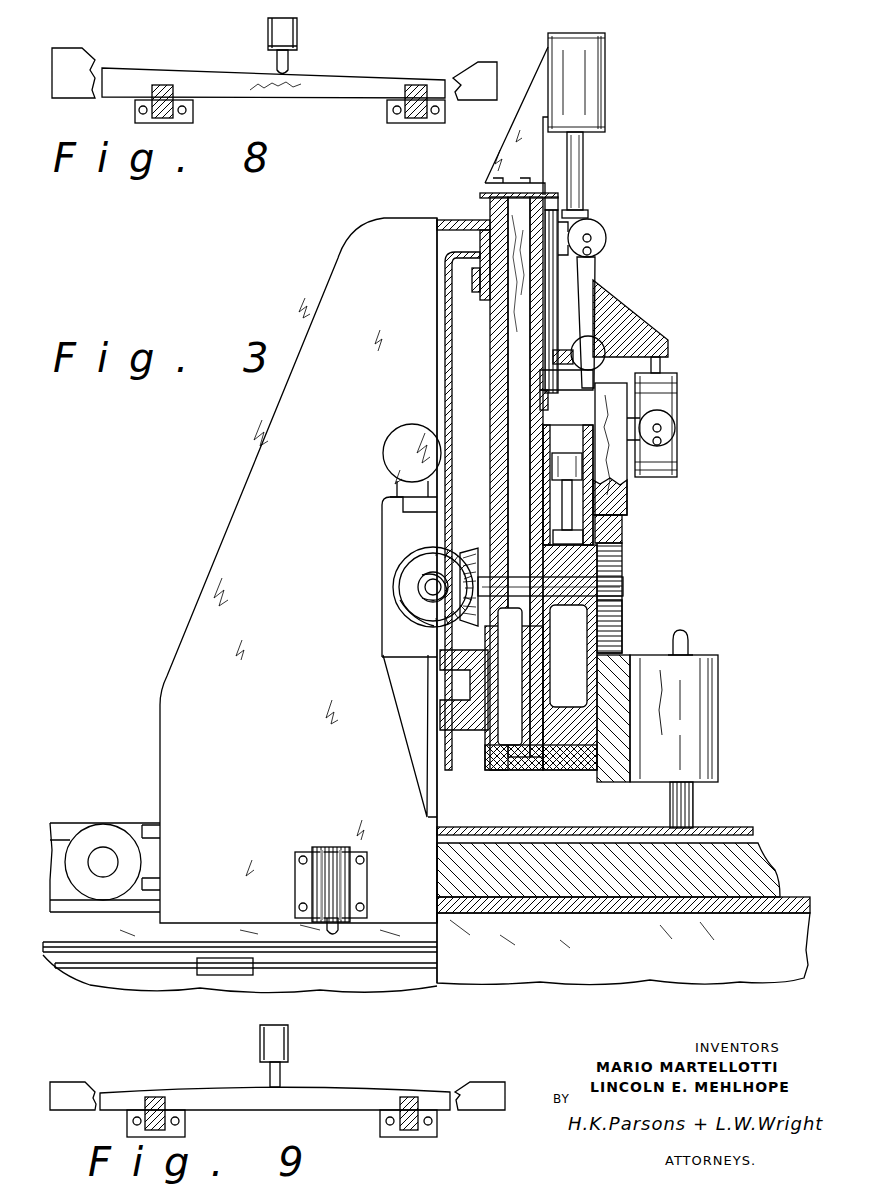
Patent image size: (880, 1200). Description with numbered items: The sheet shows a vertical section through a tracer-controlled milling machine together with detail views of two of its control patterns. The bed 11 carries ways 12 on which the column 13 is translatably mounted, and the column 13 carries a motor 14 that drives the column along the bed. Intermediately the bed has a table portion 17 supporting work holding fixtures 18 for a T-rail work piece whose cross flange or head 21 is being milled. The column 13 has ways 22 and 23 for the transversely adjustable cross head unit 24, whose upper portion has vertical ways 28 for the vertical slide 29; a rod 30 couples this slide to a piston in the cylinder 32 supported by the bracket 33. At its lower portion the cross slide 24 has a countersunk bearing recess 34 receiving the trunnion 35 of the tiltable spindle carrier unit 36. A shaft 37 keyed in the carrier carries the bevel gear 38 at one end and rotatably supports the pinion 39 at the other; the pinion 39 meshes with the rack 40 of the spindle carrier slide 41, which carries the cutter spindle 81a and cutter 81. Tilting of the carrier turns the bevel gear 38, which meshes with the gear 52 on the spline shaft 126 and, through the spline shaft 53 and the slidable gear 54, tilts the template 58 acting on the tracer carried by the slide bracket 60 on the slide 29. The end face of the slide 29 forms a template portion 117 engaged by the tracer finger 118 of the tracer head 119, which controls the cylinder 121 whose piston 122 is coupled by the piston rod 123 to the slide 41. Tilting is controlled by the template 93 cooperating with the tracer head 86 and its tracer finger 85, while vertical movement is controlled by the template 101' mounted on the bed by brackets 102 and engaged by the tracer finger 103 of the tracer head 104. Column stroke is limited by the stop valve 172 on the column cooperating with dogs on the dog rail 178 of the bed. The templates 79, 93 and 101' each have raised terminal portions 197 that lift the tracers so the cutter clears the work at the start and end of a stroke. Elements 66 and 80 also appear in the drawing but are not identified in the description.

In FIG. 3, the bed 11 is at (702, 974).
In FIG. 3, the ways 12 is at (127, 905).
In FIG. 3, the column 13 is at (210, 590).
In FIG. 3, the motor 14 is at (103, 828).
In FIG. 3, the table portion 17 is at (800, 900).
In FIG. 3, the work holding clamps or fixtures 18 is at (765, 860).
In FIG. 3, the cross flange or head 21 is at (728, 828).
In FIG. 3, the ways 22 is at (462, 222).
In FIG. 3, the ways 23 is at (500, 770).
In FIG. 3, the cross head unit 24 is at (492, 342).
In FIG. 3, the vertical guides or ways 28 is at (552, 197).
In FIG. 3, the vertical slide 29 is at (545, 325).
In FIG. 3, the rod 30 is at (584, 164).
In FIG. 3, the cylinder 32 is at (607, 72).
In FIG. 3, the bracket 33 is at (541, 64).
In FIG. 3, the countersunk cylindrical bearing recess 34 is at (508, 630).
In FIG. 3, the trunnion 35 is at (570, 657).
In FIG. 3, the spindle carrier unit 36 is at (556, 760).
In FIG. 3, the shaft 37 is at (624, 586).
In FIG. 3, the bevel gear 38 is at (469, 550).
In FIG. 3, the pinion 39 is at (622, 558).
In FIG. 3, the rack 40 is at (622, 650).
In FIG. 3, the spindle carrier slide 41 is at (622, 532).
In FIG. 3, the gear 52 is at (430, 530).
In FIG. 3, the spline shaft 53 is at (422, 582).
In FIG. 3, the gear 54 is at (420, 599).
In FIG. 3, the template 58 is at (584, 384).
In FIG. 3, the slide bracket 60 is at (596, 260).
In FIG. 3, the hand wheel 66 is at (392, 442).
In FIG. 3, the template 79 is at (75, 970).
In FIG. 3, the rail block 80 is at (218, 976).
In FIG. 3, the cutter 81 is at (694, 808).
In FIG. 3, the cutter spindle 81a is at (716, 788).
In FIG. 8, the tracer finger 85 is at (288, 65).
In FIG. 8, the tracer head 86 is at (297, 34).
In FIG. 8, the template 93 is at (350, 86).
In FIG. 9, the template 101' is at (275, 1080).
In FIG. 8, the brackets 102 is at (193, 118).
In FIG. 9, the brackets 102 is at (127, 1126).
In FIG. 9, the tracer finger 103 is at (280, 1077).
In FIG. 9, the tracer head 104 is at (288, 1042).
In FIG. 3, the template portion 117 is at (617, 438).
In FIG. 3, the tracer finger 118 is at (660, 367).
In FIG. 3, the tracer head 119 is at (677, 398).
In FIG. 3, the cylinder 121 is at (545, 456).
In FIG. 3, the piston 122 is at (572, 486).
In FIG. 3, the piston rod 123 is at (628, 499).
In FIG. 3, the spline shaft 126 is at (432, 625).
In FIG. 3, the stop valve 172 is at (295, 858).
In FIG. 3, the dog rail 178 is at (42, 955).
In FIG. 8, the raised terminal portions 197 is at (64, 50).
In FIG. 9, the raised terminal portions 197 is at (64, 1074).